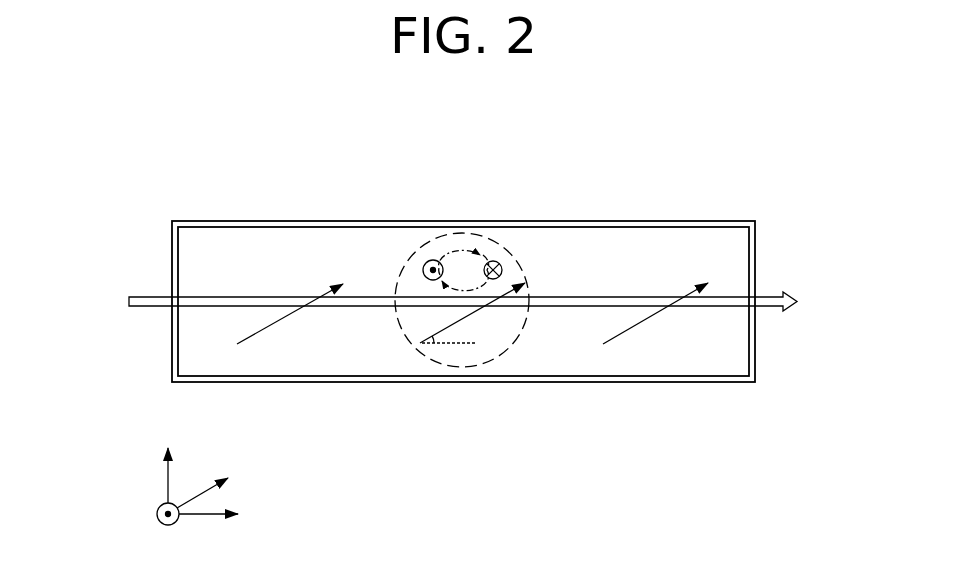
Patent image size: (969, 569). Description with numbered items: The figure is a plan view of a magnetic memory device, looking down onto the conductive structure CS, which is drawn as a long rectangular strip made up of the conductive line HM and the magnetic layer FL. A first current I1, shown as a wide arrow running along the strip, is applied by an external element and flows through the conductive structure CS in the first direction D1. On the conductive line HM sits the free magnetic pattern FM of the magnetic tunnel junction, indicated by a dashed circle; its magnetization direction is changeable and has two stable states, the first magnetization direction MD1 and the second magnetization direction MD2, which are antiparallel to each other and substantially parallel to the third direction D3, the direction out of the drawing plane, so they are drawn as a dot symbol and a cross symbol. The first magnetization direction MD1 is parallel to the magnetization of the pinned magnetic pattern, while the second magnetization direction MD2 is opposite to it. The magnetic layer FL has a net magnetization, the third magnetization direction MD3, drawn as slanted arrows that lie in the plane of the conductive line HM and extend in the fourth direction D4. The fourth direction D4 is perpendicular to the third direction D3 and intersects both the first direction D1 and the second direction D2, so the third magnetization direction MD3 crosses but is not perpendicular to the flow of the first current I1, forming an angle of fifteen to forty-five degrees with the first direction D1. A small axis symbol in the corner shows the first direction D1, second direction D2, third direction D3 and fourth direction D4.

The conductive line HM is at (756, 243).
The magnetic layer FL is at (756, 274).
The conductive structure CS is at (840, 236).
The first current I1 is at (712, 307).
The third magnetization direction MD3 is at (288, 310).
The free magnetic pattern FM is at (455, 233).
The first magnetization direction MD1 is at (424, 265).
The second magnetization direction MD2 is at (493, 261).
The first direction D1 is at (222, 514).
The second direction D2 is at (168, 460).
The third direction D3 is at (168, 528).
The fourth direction D4 is at (218, 488).